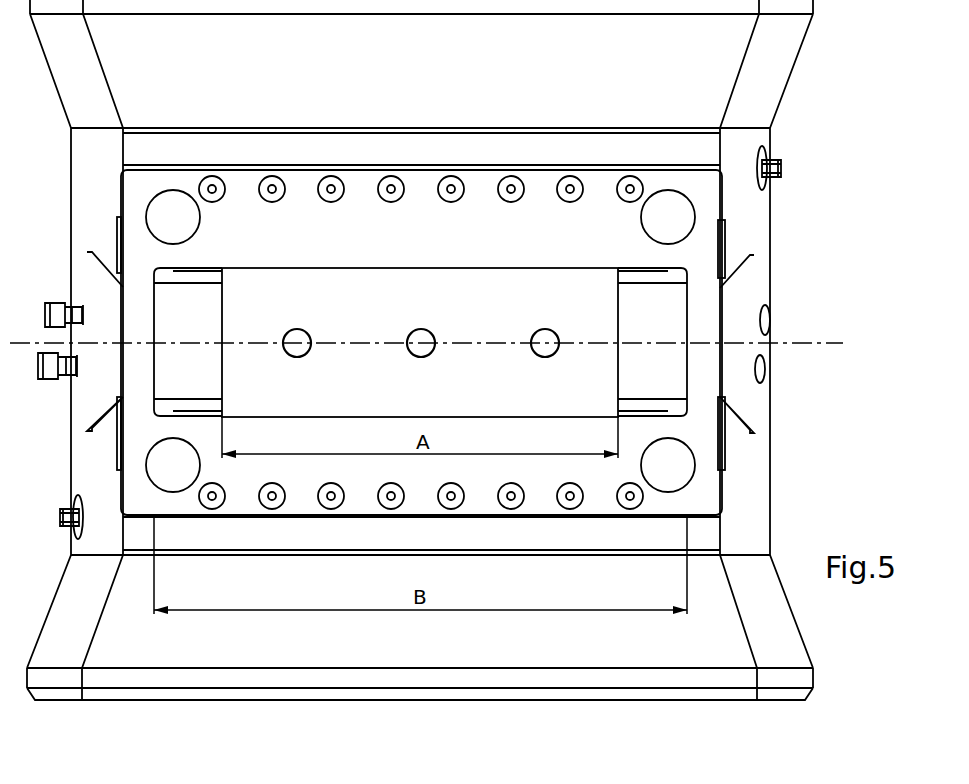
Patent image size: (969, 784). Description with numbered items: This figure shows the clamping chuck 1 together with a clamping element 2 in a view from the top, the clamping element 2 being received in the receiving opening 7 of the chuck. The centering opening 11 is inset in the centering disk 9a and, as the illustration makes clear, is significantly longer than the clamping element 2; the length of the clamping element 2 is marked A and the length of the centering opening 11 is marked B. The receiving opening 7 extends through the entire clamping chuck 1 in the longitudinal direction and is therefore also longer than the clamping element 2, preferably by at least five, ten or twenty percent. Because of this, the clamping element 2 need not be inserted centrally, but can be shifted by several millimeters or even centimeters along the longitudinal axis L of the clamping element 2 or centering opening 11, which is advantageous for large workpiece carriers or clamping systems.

The clamping chuck 1 is at (797, 201).
The clamping element 2 is at (480, 305).
The receiving opening 7 is at (735, 287).
The centering disk 9a is at (593, 185).
The centering opening 11 is at (193, 310).
The longitudinal axis L is at (817, 345).